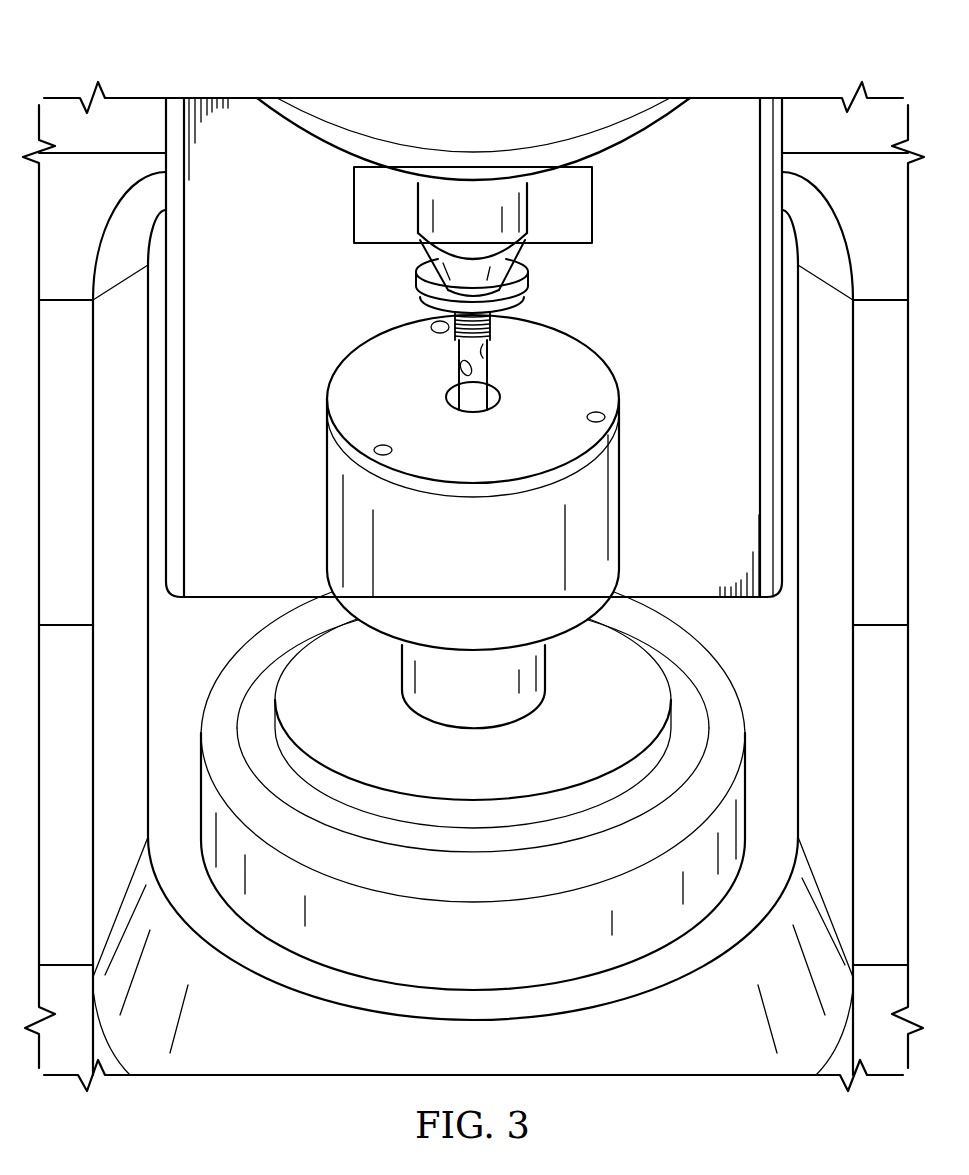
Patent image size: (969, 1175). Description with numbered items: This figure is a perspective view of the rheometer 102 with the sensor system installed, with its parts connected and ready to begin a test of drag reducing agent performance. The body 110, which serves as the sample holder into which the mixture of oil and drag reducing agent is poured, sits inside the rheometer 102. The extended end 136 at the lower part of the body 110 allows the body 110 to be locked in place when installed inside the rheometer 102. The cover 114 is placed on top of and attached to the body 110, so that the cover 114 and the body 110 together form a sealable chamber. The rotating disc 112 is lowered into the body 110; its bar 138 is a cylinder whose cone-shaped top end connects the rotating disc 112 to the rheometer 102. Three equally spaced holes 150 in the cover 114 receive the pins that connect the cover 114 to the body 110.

The rheometer 102 is at (332, 73).
The body 110 is at (327, 494).
The rotating disc 112 is at (455, 375).
The cover 114 is at (580, 332).
The extended end 136 is at (400, 660).
The bar 138 is at (491, 336).
The holes 150 is at (383, 447).